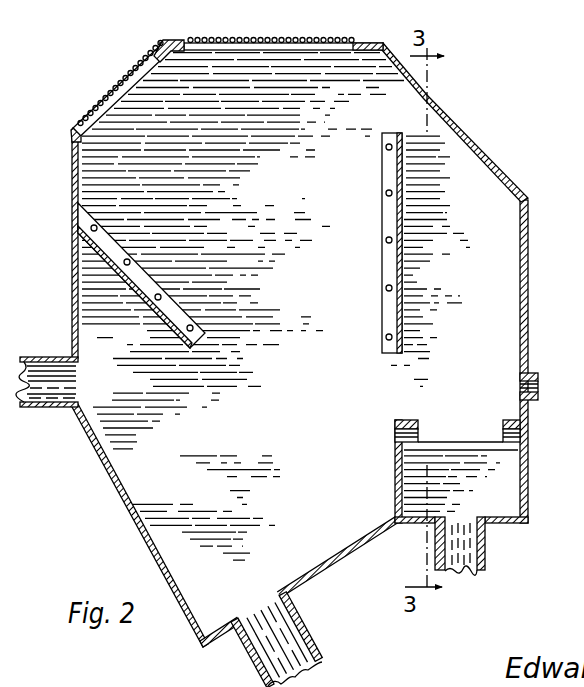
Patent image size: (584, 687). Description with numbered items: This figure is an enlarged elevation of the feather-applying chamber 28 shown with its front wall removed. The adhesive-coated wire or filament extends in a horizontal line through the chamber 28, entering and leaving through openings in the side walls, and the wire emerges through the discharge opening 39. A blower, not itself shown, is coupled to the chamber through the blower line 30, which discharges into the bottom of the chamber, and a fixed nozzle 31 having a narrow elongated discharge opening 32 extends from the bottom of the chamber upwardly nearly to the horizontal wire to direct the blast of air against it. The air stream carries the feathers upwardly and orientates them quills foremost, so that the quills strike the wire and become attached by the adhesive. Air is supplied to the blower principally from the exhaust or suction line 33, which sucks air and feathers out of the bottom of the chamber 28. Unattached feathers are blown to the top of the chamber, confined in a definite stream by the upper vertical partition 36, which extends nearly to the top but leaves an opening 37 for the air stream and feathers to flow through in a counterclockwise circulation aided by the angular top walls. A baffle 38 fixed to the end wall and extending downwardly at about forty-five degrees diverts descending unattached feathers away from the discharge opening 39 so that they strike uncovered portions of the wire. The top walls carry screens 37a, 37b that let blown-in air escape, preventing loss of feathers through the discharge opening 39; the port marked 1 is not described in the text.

The port fitting 1 is at (541, 393).
The feather-applying chamber 28 is at (133, 483).
The blower line 30 is at (470, 553).
The fixed nozzle 31 is at (478, 450).
The discharge opening 32 is at (414, 434).
The exhaust or suction line 33 is at (284, 662).
The upper vertical partition 36 is at (399, 272).
The opening 37 is at (408, 115).
The screen 37a is at (250, 40).
The screen 37b is at (135, 71).
The baffle 38 is at (157, 307).
The discharge opening 39 is at (53, 388).